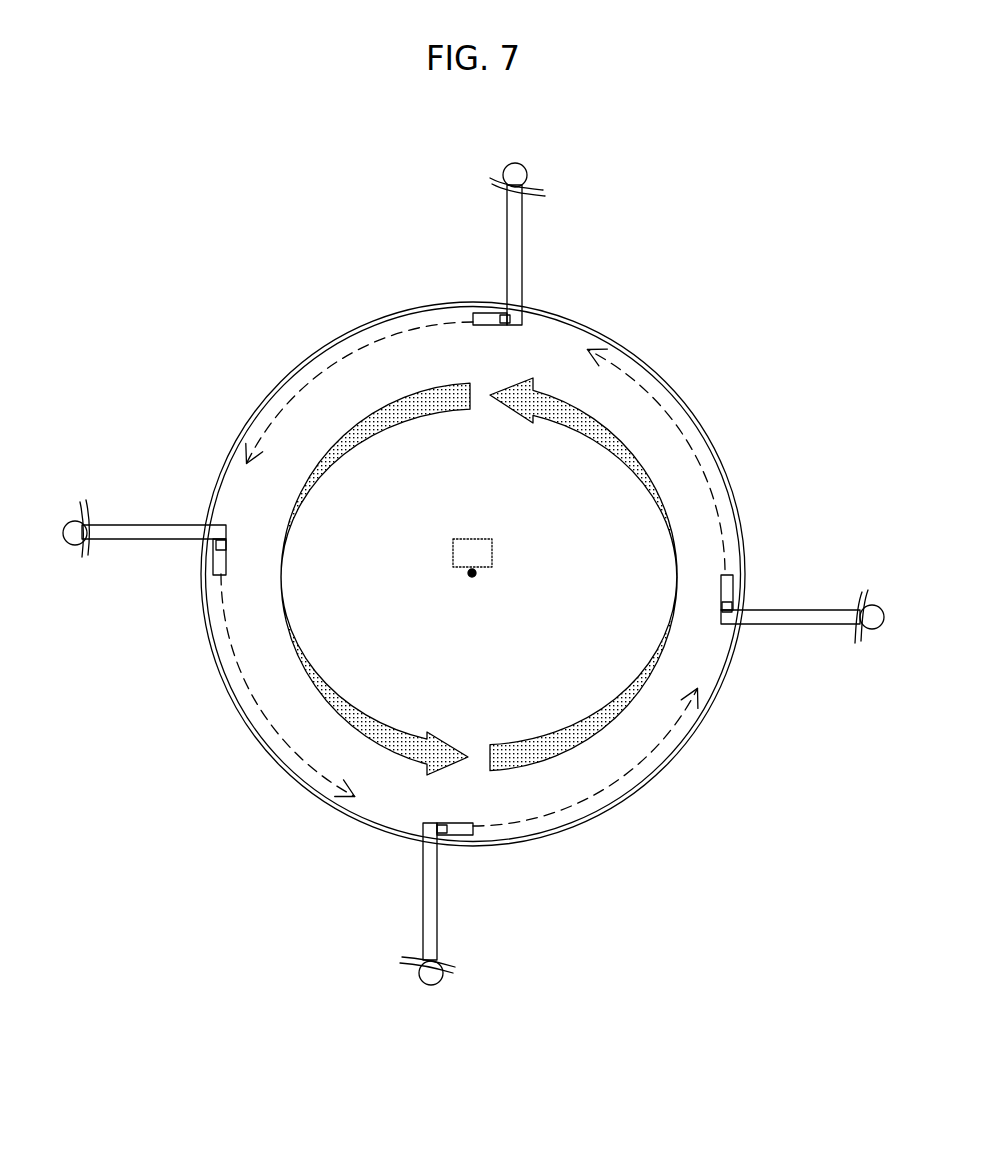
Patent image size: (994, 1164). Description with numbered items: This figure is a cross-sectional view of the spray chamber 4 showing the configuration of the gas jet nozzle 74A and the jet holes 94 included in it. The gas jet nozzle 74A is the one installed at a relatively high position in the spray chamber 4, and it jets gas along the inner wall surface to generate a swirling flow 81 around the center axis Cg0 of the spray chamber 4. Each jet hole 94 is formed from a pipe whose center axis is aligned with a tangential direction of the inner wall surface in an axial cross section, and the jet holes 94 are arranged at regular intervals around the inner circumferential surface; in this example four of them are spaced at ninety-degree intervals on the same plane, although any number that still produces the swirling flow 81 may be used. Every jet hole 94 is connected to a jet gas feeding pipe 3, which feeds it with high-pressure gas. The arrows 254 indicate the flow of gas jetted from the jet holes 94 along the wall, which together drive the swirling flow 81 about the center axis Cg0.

The jet gas feeding pipe 3 is at (522, 230).
The spray chamber 4 is at (735, 493).
The gas jet nozzle 74A is at (190, 495).
The swirling flow 81 is at (397, 417).
The jet holes 94 is at (470, 313).
The arrows 254 is at (352, 352).
The center axis Cg0 is at (471, 558).